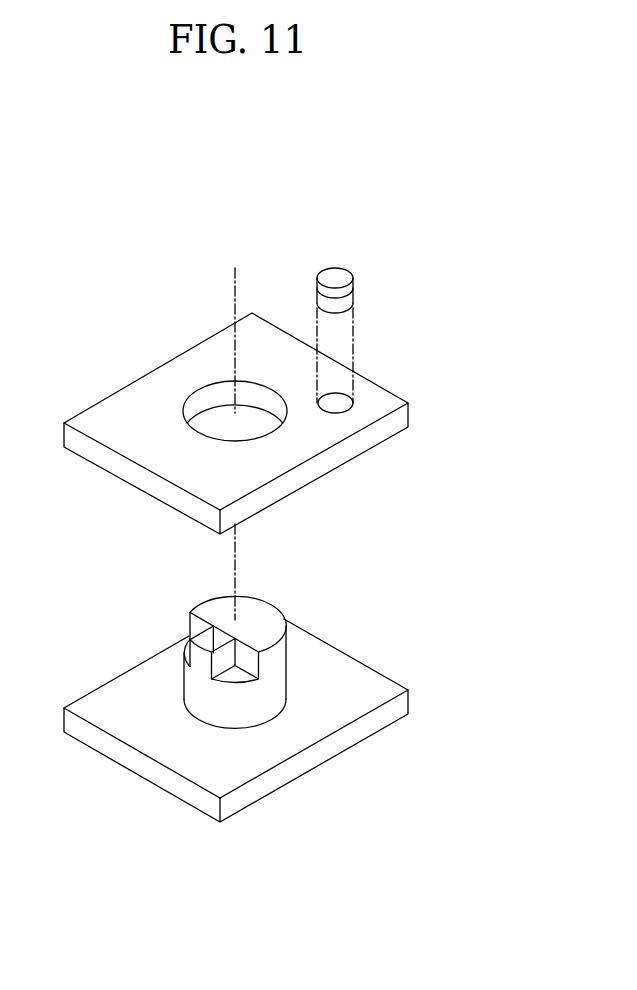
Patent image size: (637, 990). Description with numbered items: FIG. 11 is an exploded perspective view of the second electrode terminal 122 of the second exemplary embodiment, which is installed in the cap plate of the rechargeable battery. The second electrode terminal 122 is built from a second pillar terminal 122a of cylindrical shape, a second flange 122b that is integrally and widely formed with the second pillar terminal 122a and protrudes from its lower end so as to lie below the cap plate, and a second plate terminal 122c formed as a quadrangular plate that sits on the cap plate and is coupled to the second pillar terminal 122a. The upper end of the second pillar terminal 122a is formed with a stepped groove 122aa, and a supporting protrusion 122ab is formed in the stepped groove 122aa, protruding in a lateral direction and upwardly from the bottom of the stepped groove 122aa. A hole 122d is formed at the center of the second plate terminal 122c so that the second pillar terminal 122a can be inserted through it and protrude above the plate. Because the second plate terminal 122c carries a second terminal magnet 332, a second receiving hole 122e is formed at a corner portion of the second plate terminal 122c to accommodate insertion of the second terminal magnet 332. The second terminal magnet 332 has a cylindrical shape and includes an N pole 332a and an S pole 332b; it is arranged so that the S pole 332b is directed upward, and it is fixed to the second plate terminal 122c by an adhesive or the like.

The second electrode terminal 122 is at (198, 291).
The second pillar terminal 122a is at (252, 617).
The stepped groove 122aa is at (192, 623).
The supporting protrusion 122ab is at (190, 630).
The second flange 122b is at (328, 668).
The second plate terminal 122c is at (192, 367).
The hole 122d is at (197, 407).
The second receiving hole 122e is at (336, 402).
The second terminal magnet 332 is at (461, 255).
The N pole 332a is at (347, 301).
The S pole 332b is at (347, 276).